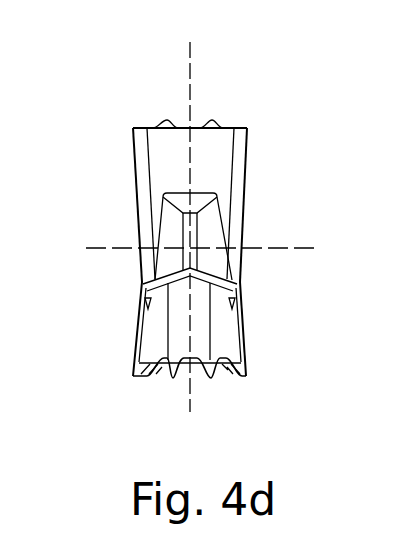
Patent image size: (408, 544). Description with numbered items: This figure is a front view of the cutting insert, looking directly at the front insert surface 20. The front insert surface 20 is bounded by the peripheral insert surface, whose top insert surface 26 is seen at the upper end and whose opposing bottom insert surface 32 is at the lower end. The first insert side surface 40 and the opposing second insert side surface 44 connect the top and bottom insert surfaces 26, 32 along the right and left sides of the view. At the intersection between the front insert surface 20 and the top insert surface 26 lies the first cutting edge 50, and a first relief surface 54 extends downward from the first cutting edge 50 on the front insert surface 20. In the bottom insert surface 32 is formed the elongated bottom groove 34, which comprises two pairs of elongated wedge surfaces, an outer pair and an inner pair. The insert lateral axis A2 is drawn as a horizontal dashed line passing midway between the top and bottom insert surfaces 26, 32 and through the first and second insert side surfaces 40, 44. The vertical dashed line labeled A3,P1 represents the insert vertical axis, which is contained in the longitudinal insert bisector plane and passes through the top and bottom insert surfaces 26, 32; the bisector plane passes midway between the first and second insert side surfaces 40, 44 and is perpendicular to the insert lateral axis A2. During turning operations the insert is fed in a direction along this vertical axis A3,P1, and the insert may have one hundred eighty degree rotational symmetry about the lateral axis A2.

The front insert surface 20 is at (148, 226).
The top insert surface 26 is at (165, 103).
The bottom insert surface 32 is at (170, 385).
The elongated bottom groove 34 is at (221, 341).
The first insert side surface 40 is at (243, 251).
The second insert side surface 44 is at (138, 190).
The first cutting edge 50 is at (148, 127).
The first relief surface 54 is at (213, 147).
The insert lateral axis A2 is at (281, 247).
The insert vertical axis and longitudinal insert bisector plane A3,P1 is at (193, 58).